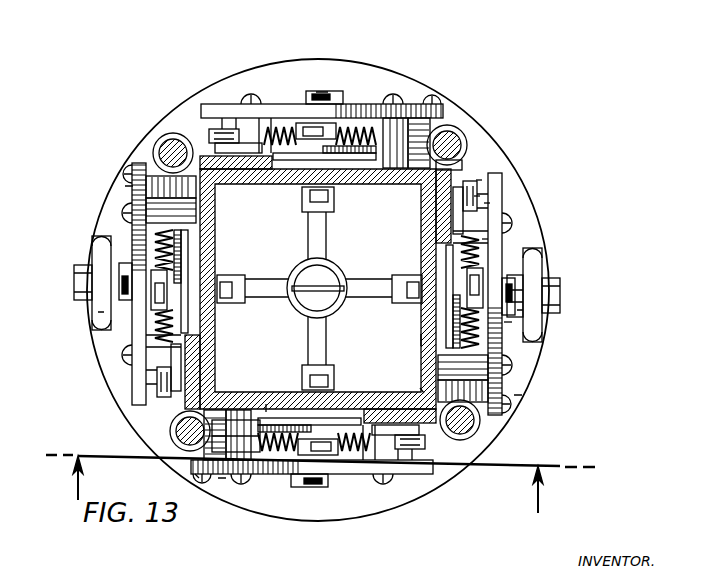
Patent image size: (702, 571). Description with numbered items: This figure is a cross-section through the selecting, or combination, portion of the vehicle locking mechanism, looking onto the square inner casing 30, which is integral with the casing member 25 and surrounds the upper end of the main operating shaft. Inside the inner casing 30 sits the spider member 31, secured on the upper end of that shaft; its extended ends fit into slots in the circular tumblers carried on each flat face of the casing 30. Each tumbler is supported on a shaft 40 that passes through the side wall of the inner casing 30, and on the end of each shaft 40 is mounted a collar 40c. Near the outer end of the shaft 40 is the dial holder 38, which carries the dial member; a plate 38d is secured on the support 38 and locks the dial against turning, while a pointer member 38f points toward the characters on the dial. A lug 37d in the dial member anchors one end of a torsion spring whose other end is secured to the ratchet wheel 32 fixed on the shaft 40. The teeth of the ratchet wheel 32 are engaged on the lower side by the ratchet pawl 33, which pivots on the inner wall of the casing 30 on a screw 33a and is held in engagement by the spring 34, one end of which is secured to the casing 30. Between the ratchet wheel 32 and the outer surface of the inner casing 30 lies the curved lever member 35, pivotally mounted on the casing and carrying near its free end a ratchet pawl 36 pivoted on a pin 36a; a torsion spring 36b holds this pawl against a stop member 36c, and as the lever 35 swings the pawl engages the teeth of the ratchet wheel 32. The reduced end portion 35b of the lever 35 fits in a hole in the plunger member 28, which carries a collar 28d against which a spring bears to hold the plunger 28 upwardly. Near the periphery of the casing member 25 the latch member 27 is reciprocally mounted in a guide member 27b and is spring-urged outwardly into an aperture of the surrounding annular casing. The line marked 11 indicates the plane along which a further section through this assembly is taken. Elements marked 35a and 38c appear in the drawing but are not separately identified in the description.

The latch supporting pin 11 is at (315, 488).
The casing member 25 is at (180, 127).
The latch member 27 is at (557, 283).
The guide member 27b is at (532, 272).
The plunger member 28 is at (163, 148).
The collar 28d is at (478, 182).
The inner casing member 30 is at (214, 237).
The spider member 31 is at (320, 240).
The ratchet wheel 32 is at (298, 126).
The ratchet pawl 33 is at (395, 275).
The screw 33a is at (422, 392).
The spring 34 is at (363, 123).
The lever member 35 is at (420, 340).
The bearing housing 35a is at (478, 425).
The reduced end portion 35b is at (455, 140).
The ratchet pawl 36 is at (227, 147).
The pin 36a is at (487, 205).
The torsion spring 36b is at (477, 197).
The stop member 36c is at (485, 240).
The lug 37d is at (515, 290).
The dial holder 38 is at (284, 116).
The post 38c is at (432, 98).
The plate 38d is at (128, 187).
The pointer member 38f is at (508, 325).
The shaft 40 is at (223, 276).
The collar 40c is at (322, 92).